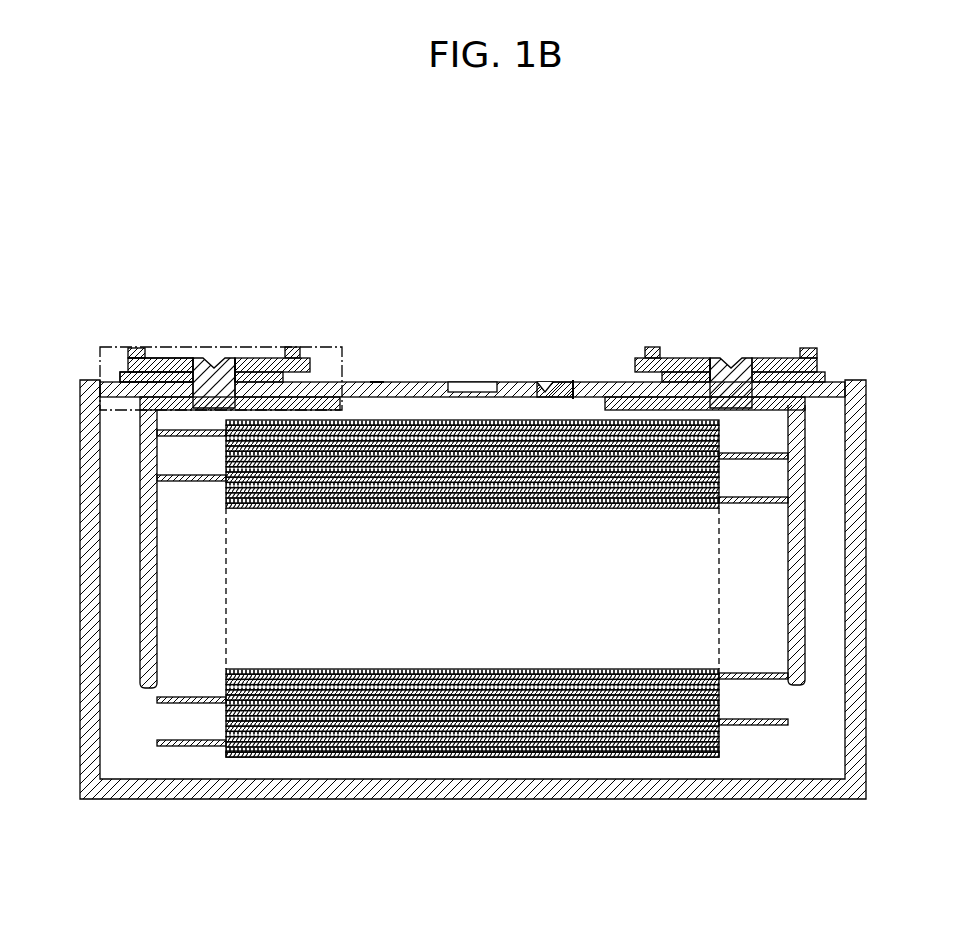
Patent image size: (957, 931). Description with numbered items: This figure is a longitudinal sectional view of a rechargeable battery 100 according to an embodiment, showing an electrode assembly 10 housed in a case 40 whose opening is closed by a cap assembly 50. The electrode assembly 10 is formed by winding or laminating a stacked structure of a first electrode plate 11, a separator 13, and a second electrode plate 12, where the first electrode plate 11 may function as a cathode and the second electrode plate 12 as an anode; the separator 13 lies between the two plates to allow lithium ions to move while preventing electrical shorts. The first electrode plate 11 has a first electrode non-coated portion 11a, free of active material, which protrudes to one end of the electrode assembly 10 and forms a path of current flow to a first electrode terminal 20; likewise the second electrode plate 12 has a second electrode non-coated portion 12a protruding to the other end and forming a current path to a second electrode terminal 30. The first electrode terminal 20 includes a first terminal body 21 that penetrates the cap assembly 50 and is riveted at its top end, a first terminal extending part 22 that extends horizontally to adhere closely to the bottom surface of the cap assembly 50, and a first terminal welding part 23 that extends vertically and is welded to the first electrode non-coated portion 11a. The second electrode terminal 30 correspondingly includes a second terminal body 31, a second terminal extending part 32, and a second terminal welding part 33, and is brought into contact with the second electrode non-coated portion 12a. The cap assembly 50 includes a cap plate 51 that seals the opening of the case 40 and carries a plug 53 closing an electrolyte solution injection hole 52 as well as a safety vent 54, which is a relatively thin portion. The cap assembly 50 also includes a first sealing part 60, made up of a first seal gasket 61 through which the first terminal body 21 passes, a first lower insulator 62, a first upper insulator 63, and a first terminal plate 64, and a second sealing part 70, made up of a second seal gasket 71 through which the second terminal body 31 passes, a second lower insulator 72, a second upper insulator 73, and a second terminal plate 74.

The rechargeable battery 100 is at (826, 212).
The electrode assembly 10 is at (478, 764).
The first electrode plate 11 is at (287, 746).
The first electrode non-coated portion 11a is at (195, 750).
The second electrode plate 12 is at (621, 726).
The second electrode non-coated portion 12a is at (747, 726).
The separator 13 is at (357, 757).
The first electrode terminal 20 is at (128, 283).
The first terminal body 21 is at (193, 357).
The first terminal extending part 22 is at (128, 350).
The first terminal welding part 23 is at (148, 448).
The second electrode terminal 30 is at (890, 283).
The second terminal body 31 is at (752, 357).
The second terminal extending part 32 is at (808, 350).
The second terminal welding part 33 is at (805, 448).
The case 40 is at (866, 582).
The cap assembly 50 is at (423, 376).
The cap plate 51 is at (377, 381).
The electrolyte solution injection hole 52 is at (539, 382).
The plug 53 is at (574, 382).
The safety vent 54 is at (472, 391).
The first sealing part 60 is at (320, 283).
The first seal gasket 61 is at (237, 362).
The first lower insulator 62 is at (257, 378).
The first upper insulator 63 is at (277, 364).
The first terminal plate 64 is at (300, 346).
The second sealing part 70 is at (735, 283).
The second seal gasket 71 is at (708, 360).
The second lower insulator 72 is at (687, 369).
The second upper insulator 73 is at (668, 362).
The second terminal plate 74 is at (642, 348).